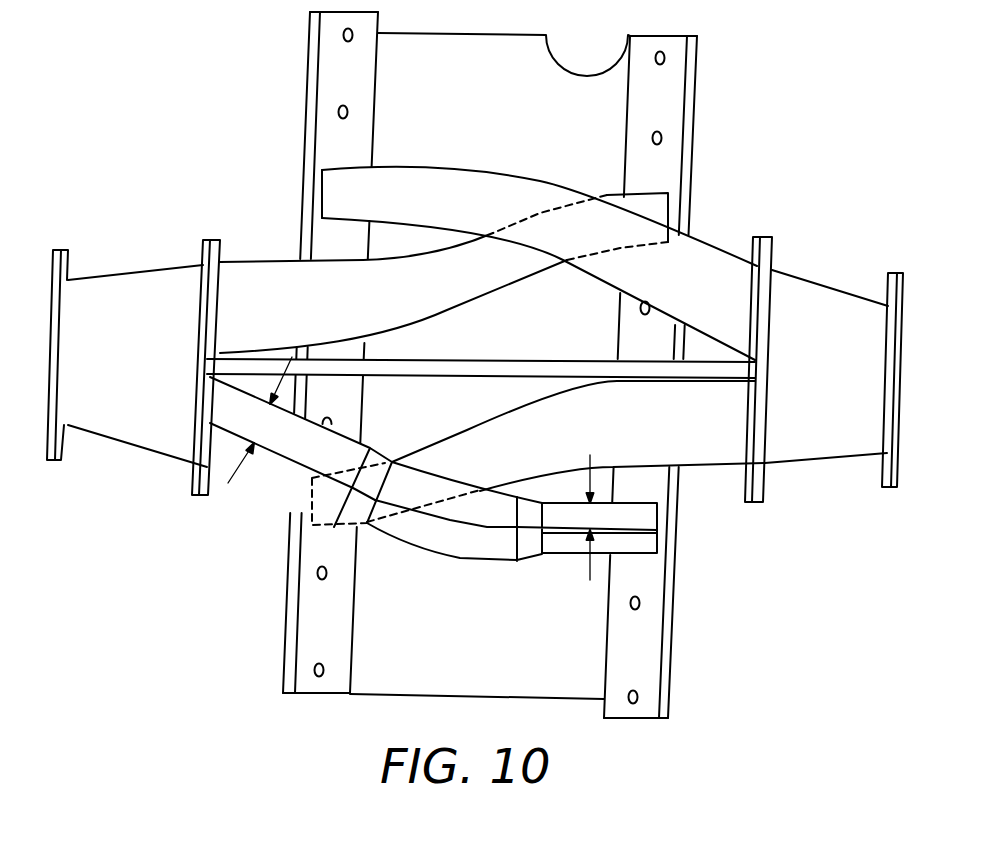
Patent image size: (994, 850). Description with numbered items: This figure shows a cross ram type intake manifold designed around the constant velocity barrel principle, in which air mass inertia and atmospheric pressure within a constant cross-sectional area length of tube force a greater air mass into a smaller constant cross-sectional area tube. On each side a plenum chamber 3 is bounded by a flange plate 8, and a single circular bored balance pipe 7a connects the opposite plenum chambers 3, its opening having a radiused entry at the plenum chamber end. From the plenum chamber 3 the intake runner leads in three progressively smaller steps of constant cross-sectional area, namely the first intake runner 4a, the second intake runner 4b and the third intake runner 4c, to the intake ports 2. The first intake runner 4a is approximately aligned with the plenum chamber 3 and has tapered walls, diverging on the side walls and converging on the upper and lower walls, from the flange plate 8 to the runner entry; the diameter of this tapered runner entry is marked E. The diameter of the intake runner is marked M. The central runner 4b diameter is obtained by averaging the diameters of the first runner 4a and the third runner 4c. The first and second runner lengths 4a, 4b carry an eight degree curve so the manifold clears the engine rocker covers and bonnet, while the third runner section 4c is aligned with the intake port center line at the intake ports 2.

The flange plate 8 is at (70, 266).
The plenum chamber 3 is at (150, 354).
The balance pipe 7a is at (488, 367).
The first intake runner 4a is at (273, 485).
The second intake runner 4b is at (442, 541).
The third intake runner 4c is at (570, 550).
The intake port 2 is at (657, 540).
The diameter of tapered runner entry E is at (260, 420).
The diameter of intake runner M is at (588, 517).